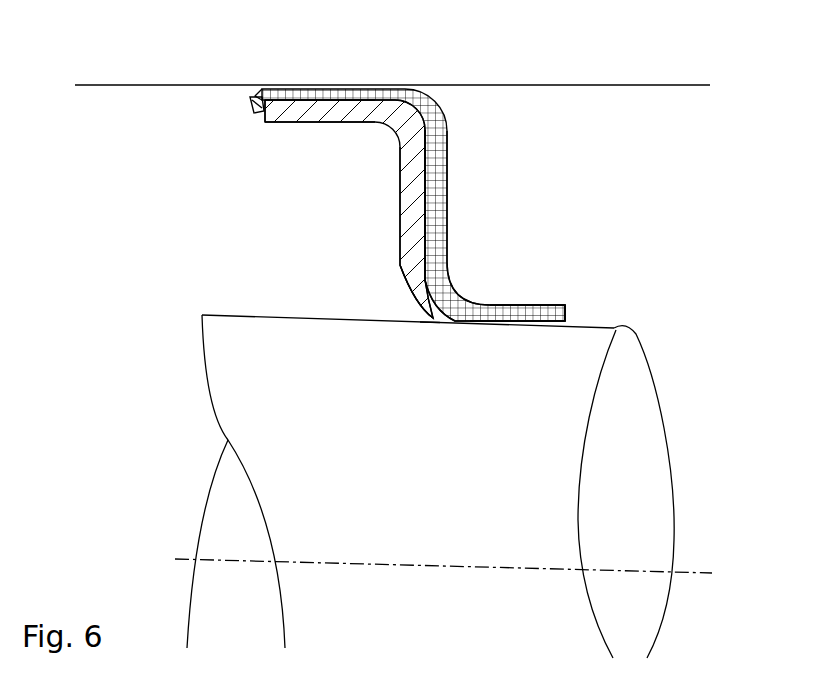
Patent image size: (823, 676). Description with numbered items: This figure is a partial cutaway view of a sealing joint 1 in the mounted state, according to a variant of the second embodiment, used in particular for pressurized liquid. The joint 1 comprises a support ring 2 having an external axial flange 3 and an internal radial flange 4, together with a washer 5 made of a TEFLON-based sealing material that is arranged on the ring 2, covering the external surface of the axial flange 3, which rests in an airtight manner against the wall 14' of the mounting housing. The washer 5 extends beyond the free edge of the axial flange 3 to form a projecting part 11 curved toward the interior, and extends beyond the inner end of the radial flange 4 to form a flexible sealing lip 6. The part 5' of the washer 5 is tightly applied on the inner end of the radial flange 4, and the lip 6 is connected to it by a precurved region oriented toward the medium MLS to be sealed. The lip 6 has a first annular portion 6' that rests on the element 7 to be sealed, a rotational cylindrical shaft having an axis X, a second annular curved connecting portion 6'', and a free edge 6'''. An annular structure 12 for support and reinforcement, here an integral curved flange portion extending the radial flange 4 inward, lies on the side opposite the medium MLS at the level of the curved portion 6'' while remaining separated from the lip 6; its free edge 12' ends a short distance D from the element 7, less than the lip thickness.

The sealing joint 1 is at (242, 213).
The support ring 2 is at (347, 209).
The external axial flange 3 is at (345, 118).
The internal radial flange 4 is at (410, 183).
The washer 5 is at (410, 205).
The part of the washer 5' is at (458, 205).
The sealing lip 6 is at (496, 262).
The first annular portion 6' is at (517, 285).
The second annular curved connecting portion 6'' is at (459, 275).
The free edge 6''' is at (606, 302).
The element to be sealed 7 is at (628, 367).
The projecting part 11 is at (257, 102).
The annular structure for support and reinforcement 12 is at (379, 291).
The free edge of the flange 12' is at (282, 388).
The wall of the mounting housing 14' is at (392, 59).
The short distance D is at (452, 288).
The axis X is at (675, 572).
The medium to be sealed MLS is at (566, 158).